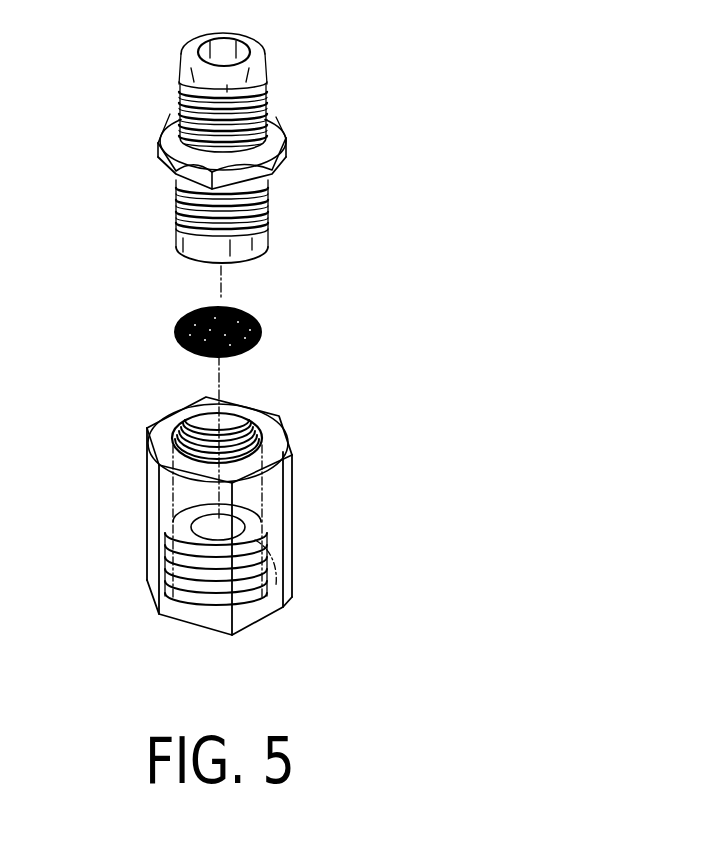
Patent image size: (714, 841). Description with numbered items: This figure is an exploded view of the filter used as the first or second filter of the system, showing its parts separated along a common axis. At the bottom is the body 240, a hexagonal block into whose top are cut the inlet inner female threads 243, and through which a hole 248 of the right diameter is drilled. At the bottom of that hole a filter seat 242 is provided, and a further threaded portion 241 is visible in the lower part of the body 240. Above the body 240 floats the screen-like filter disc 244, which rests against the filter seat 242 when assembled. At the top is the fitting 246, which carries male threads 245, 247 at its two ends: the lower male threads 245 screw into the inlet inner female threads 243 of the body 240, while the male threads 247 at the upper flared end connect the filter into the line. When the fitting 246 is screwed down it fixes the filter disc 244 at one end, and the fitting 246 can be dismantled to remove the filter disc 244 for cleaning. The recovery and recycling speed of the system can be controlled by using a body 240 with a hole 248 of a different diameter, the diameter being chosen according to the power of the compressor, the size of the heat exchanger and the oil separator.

The body 240 is at (291, 517).
The lower threaded port 241 is at (275, 603).
The filter seat 242 is at (238, 496).
The inlet inner female threads 243 is at (272, 418).
The screen-like filter disc 244 is at (262, 331).
The male threads 245 is at (266, 231).
The fitting 246 is at (288, 139).
The male threads 247 is at (268, 72).
The hole 248 is at (182, 502).